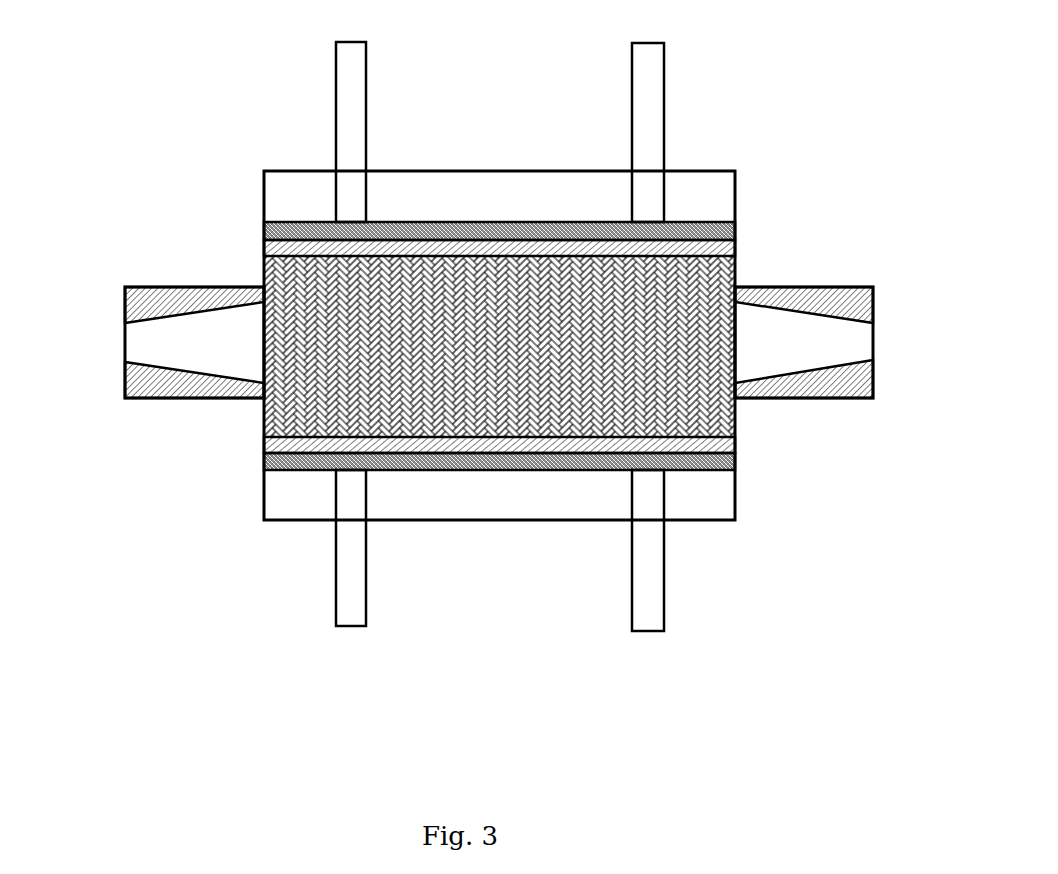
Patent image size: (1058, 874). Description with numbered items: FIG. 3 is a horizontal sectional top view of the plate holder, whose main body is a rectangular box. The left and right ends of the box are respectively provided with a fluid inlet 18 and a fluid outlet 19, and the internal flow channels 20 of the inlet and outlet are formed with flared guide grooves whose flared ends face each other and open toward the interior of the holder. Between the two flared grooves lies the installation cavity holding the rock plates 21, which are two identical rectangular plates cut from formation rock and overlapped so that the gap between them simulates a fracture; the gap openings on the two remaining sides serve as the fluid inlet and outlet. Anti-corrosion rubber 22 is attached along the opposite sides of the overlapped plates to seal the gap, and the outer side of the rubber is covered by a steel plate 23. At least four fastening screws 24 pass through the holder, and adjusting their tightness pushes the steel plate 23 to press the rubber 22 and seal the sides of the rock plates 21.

The fluid inlet 18 is at (122, 340).
The fluid outlet 19 is at (877, 345).
The internal flow channels 20 is at (228, 335).
The rock plates 21 is at (312, 382).
The anti-corrosion rubber 22 is at (268, 450).
The steel plate 23 is at (265, 472).
The fastening screws 24 is at (343, 90).